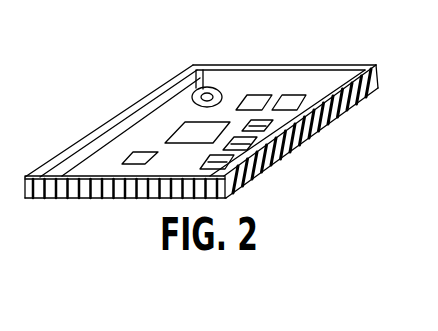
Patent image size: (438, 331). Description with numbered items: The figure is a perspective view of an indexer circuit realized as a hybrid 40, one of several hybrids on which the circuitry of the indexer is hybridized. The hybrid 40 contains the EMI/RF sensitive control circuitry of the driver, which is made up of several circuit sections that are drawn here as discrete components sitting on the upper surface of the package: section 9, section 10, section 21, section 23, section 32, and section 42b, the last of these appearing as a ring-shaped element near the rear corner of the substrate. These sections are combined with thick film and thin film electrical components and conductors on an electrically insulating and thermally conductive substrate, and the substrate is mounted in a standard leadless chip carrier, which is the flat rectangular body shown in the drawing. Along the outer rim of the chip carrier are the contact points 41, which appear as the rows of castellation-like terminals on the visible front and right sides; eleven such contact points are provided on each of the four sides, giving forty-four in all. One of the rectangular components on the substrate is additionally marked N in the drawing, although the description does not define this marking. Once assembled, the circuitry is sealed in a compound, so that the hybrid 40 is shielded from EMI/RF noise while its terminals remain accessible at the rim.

The hybrid 40 is at (377, 70).
The contact points 41 is at (366, 97).
The section 21 is at (247, 182).
The section 9 is at (297, 143).
The section 42b is at (208, 89).
The component pad N is at (264, 100).
The section 23 is at (176, 133).
The section 32 is at (127, 158).
The section 10 is at (258, 152).